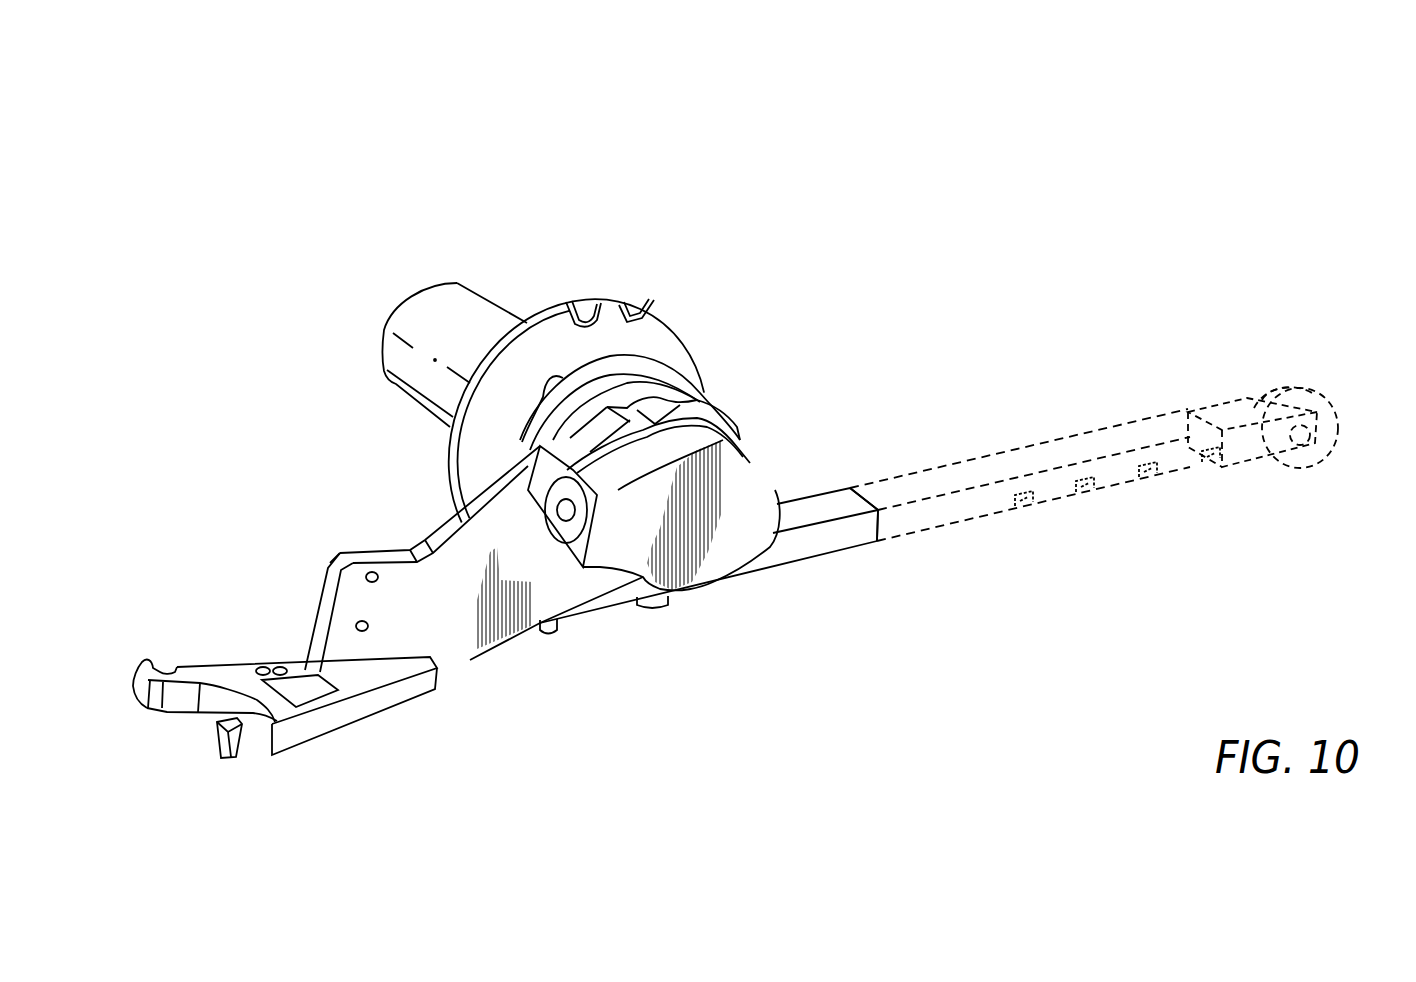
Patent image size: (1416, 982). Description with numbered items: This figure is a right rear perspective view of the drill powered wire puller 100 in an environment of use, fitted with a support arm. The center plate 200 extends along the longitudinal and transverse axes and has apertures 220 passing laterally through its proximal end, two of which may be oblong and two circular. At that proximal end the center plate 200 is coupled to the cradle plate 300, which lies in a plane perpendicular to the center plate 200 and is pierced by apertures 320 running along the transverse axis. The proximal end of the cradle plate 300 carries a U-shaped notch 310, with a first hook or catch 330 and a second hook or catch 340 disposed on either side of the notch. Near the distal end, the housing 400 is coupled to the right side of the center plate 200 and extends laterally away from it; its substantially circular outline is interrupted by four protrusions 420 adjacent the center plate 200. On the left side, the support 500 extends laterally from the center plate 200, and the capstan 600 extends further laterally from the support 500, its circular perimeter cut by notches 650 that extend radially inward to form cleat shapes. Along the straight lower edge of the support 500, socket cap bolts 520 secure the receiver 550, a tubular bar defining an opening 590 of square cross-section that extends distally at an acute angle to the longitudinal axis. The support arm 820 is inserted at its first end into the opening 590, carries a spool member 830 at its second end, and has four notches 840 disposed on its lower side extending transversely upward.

The drill powered wire puller 100 is at (245, 204).
The center plate 200 is at (550, 577).
The apertures 220 is at (356, 624).
The cradle plate 300 is at (410, 688).
The U-shaped notch 310 is at (213, 717).
The apertures 320 is at (281, 667).
The first hook or catch 330 is at (227, 746).
The second hook or catch 340 is at (145, 684).
The housing 400 is at (685, 543).
The protrusions 420 is at (700, 408).
The support 500 is at (622, 366).
The socket cap bolts 520 is at (542, 632).
The receiver 550 is at (794, 543).
The opening 590 is at (867, 497).
The capstan 600 is at (417, 330).
The notches 650 is at (578, 315).
The support arm 820 is at (1062, 462).
The spool member 830 is at (1298, 403).
The clips 840 is at (1088, 493).